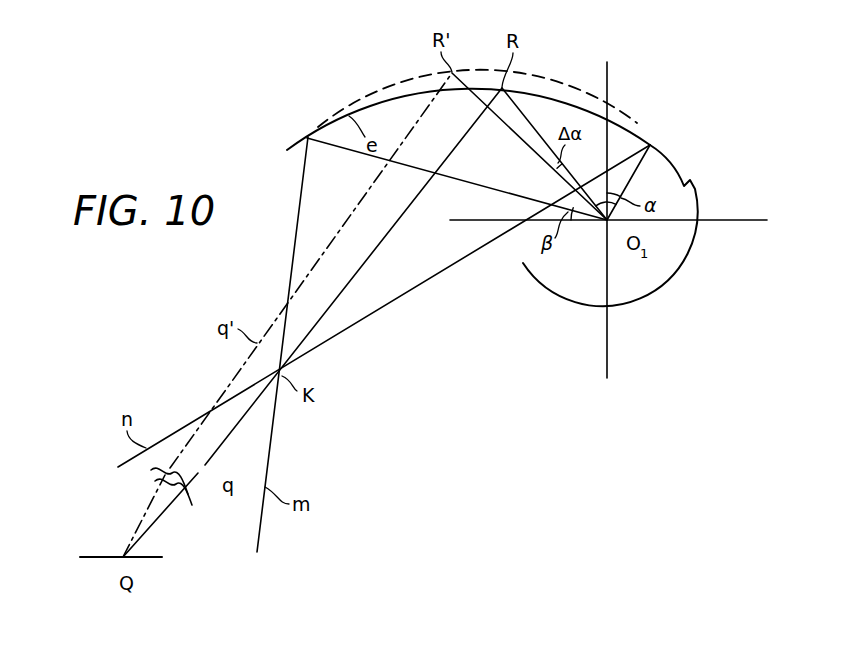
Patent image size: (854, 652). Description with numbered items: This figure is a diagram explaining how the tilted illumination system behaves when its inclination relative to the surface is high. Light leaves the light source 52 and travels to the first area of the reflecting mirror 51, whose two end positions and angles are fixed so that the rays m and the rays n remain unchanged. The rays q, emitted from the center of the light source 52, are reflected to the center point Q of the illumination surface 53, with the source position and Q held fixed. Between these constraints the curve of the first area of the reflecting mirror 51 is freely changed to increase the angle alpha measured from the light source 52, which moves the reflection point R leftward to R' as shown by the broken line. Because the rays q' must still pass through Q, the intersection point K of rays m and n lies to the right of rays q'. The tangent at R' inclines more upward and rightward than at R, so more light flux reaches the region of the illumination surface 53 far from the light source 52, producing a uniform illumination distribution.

The reflecting mirror 51 is at (665, 137).
The light source 52 is at (597, 235).
The illumination surface 53 is at (101, 571).